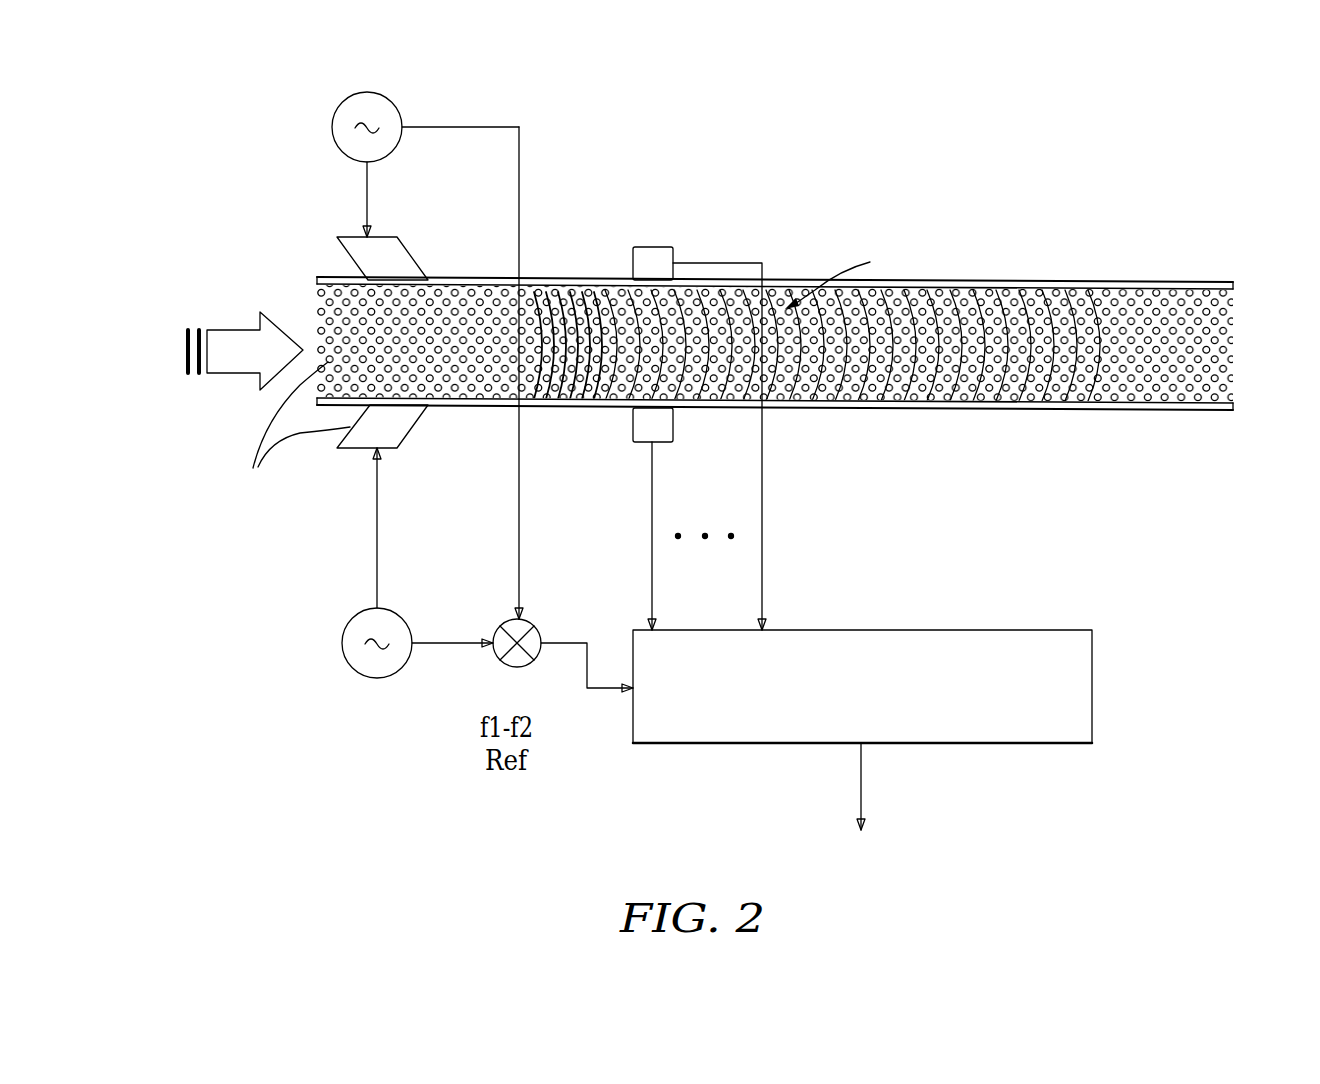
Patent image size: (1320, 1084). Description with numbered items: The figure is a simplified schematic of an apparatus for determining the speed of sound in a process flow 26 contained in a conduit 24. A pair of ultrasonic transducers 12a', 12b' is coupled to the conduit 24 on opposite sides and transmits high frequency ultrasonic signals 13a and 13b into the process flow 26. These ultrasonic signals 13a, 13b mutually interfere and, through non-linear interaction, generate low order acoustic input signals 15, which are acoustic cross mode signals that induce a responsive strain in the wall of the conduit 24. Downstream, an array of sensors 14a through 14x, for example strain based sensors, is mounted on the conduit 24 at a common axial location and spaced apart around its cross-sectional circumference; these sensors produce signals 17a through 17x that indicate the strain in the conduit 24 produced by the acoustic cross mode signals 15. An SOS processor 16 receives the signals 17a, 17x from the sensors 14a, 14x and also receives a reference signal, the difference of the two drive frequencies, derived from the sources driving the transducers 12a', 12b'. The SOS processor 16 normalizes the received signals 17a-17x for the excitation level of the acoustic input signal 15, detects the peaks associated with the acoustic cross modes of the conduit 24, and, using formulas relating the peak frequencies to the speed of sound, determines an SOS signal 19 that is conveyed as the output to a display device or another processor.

The ultrasonic transducer 12a' is at (409, 352).
The ultrasonic transducer 12b' is at (311, 534).
The ultrasonic signal 13a is at (466, 290).
The ultrasonic signal 13b is at (485, 403).
The acoustic input signal 15 is at (606, 296).
The sensor 14x is at (673, 253).
The sensor 14a is at (684, 441).
The signal 17a is at (652, 562).
The signal 17x is at (760, 570).
The SOS processor 16 is at (1092, 686).
The SOS signal 19 is at (861, 775).
The conduit 24 is at (1086, 280).
The process flow 26 is at (228, 379).